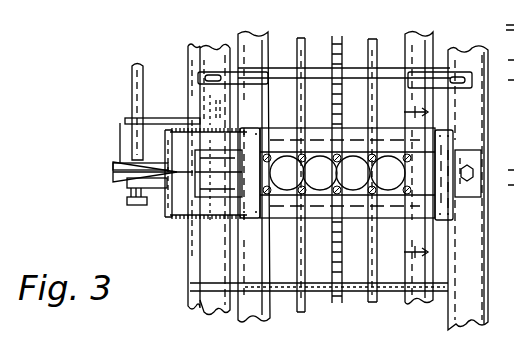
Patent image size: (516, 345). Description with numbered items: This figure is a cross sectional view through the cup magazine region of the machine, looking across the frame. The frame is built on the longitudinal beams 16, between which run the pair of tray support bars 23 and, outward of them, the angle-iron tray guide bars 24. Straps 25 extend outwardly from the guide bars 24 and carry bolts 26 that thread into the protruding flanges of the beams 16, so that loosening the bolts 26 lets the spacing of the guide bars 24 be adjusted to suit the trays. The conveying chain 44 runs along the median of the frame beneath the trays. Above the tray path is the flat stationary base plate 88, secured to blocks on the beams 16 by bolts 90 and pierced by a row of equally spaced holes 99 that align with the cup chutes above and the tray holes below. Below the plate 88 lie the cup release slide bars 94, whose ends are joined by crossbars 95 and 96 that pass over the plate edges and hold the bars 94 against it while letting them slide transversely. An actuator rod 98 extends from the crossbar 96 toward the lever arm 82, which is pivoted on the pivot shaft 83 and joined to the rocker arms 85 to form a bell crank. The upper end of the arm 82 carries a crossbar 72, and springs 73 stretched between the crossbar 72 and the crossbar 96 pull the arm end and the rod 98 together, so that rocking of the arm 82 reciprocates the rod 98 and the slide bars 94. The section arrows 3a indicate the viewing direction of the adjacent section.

The beams 16 is at (200, 44).
The straps 25 is at (230, 48).
The tray guide bars 24 is at (262, 32).
The tray support bars 23 is at (302, 36).
The bolts 26 is at (200, 74).
The springs 73 is at (222, 236).
The conveying chain 44 is at (346, 302).
The cup release slide bars 94 is at (407, 134).
The holes 99 is at (354, 156).
The crossbar 95 is at (337, 202).
The crossbar 96 is at (416, 190).
The base plate 88 is at (480, 152).
The bolts 90 is at (473, 170).
The section line 3a is at (426, 112).
The actuator rod 98 is at (192, 192).
The crossbar 72 is at (164, 212).
The lever arm 82 is at (126, 176).
The pivot shaft 83 is at (134, 102).
The rocker arms 85 is at (134, 150).